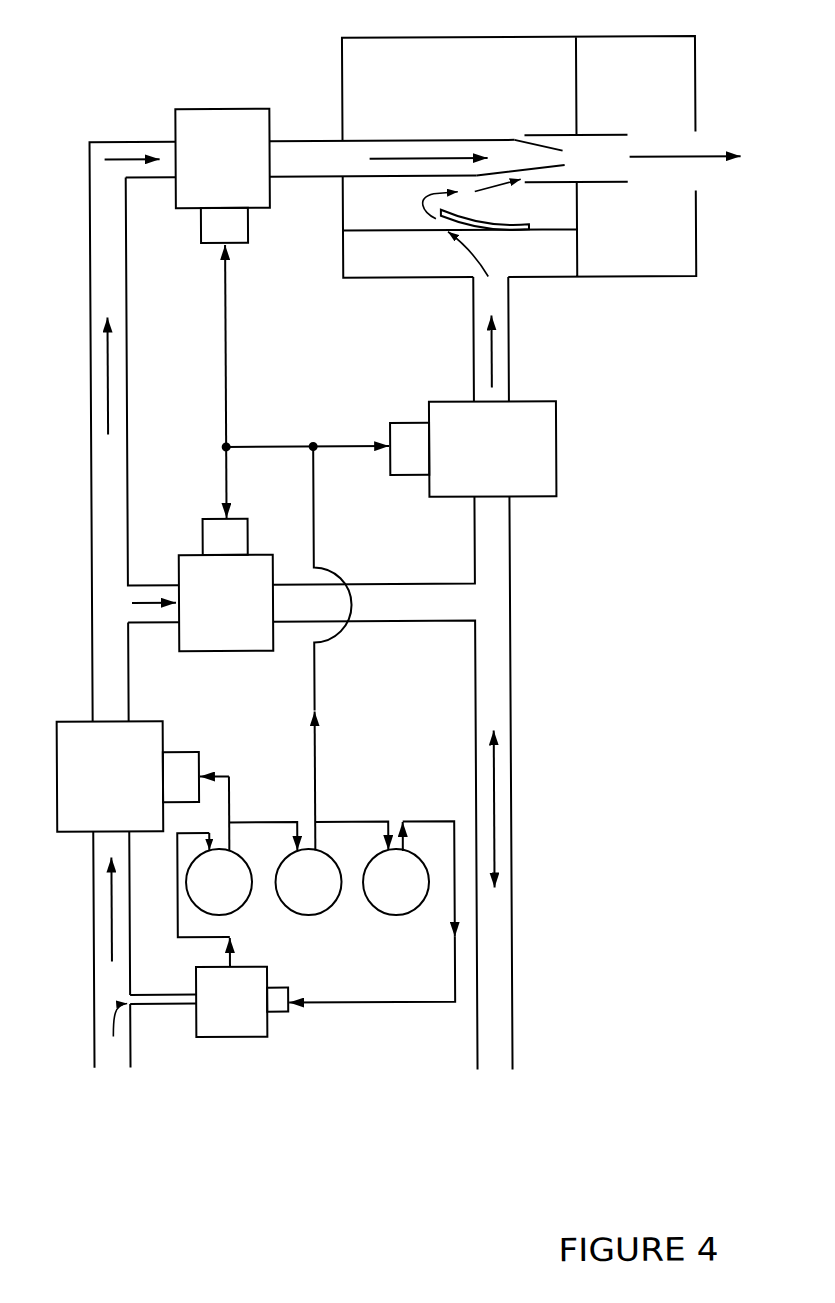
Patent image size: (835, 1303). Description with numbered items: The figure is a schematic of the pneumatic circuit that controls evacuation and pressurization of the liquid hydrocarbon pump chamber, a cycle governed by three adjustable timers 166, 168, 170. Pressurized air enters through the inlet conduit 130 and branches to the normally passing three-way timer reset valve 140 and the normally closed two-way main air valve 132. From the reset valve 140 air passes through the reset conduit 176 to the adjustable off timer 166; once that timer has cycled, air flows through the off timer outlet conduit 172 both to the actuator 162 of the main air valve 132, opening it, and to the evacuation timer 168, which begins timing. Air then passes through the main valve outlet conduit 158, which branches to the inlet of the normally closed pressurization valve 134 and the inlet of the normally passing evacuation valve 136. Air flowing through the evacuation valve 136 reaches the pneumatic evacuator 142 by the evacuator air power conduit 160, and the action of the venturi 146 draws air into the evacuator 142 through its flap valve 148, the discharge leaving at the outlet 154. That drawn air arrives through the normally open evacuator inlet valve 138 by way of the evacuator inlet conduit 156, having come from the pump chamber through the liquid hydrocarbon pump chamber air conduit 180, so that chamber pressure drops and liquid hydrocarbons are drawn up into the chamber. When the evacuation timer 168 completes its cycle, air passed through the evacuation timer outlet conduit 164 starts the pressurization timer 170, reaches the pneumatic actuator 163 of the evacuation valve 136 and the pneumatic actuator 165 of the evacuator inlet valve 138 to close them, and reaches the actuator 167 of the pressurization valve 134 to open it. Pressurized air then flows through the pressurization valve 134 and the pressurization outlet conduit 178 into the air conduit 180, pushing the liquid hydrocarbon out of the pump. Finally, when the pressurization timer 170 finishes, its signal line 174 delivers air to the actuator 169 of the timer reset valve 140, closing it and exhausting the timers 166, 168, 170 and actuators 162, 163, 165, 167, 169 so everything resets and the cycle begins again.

The inlet conduit 130 is at (91, 968).
The main air valve 132 is at (110, 776).
The pressurization valve 134 is at (226, 603).
The evacuation valve 136 is at (222, 159).
The evacuator inlet valve 138 is at (493, 449).
The timer reset valve 140 is at (190, 1002).
The pneumatic evacuator 142 is at (427, 36).
The venturi 146 is at (565, 156).
The flap valve 148 is at (495, 217).
The outlet 154 is at (693, 156).
The evacuator inlet conduit 156 is at (512, 333).
The main valve outlet conduit 158 is at (88, 405).
The evacuator air power conduit 160 is at (310, 138).
The actuator 162 is at (173, 752).
The pneumatic actuator 163 is at (240, 231).
The evacuation timer outlet conduit 164 is at (264, 445).
The pneumatic actuator 165 is at (418, 427).
The off timer 166 is at (219, 882).
The actuator 167 is at (246, 537).
The evacuation timer 168 is at (308, 882).
The actuator 169 is at (275, 982).
The pressurization timer 170 is at (396, 882).
The off timer outlet conduit 172 is at (233, 807).
The signal line 174 is at (411, 815).
The reset conduit 176 is at (175, 902).
The pressurization outlet conduit 178 is at (455, 580).
The liquid hydrocarbon pump chamber air conduit 180 is at (514, 960).